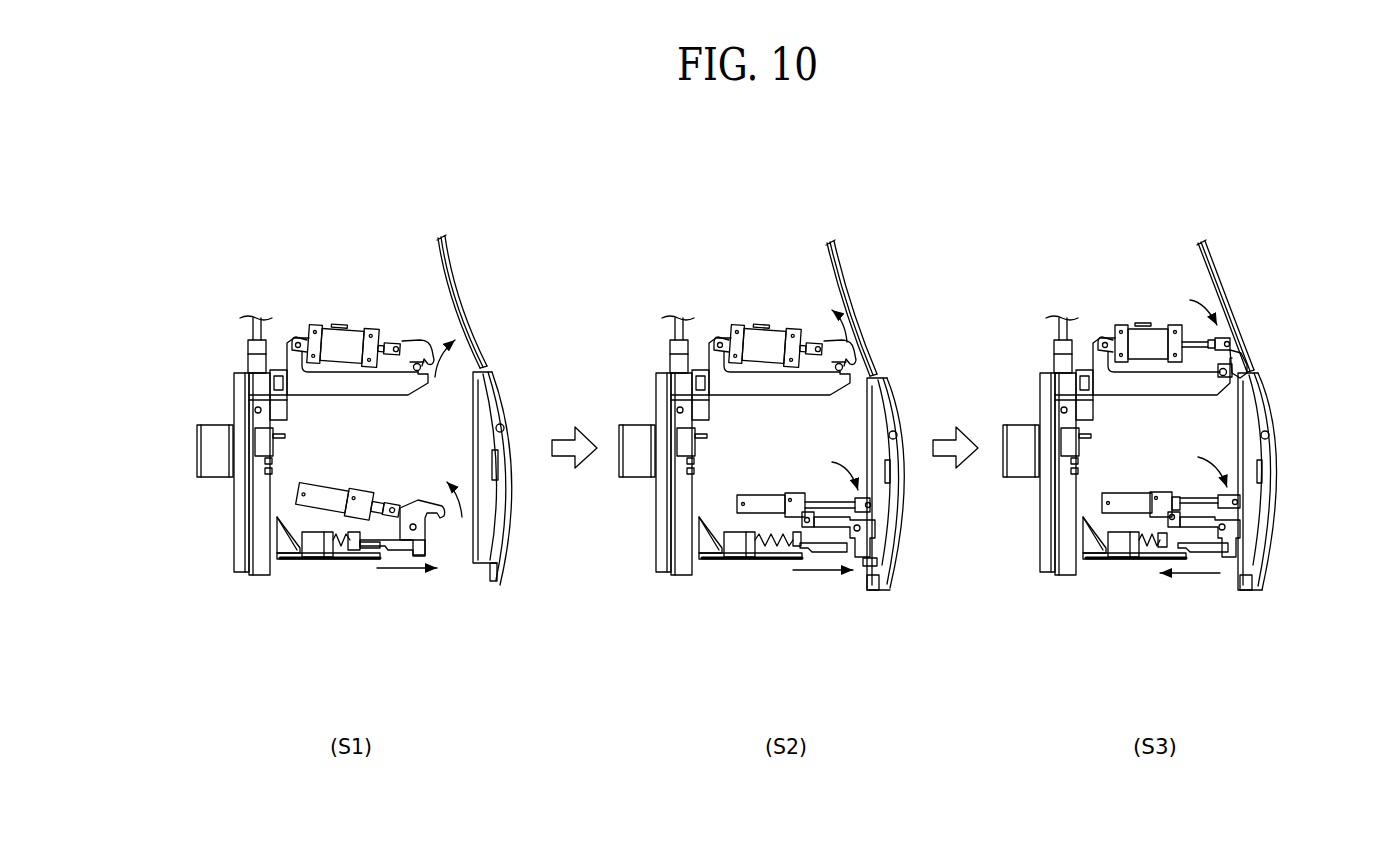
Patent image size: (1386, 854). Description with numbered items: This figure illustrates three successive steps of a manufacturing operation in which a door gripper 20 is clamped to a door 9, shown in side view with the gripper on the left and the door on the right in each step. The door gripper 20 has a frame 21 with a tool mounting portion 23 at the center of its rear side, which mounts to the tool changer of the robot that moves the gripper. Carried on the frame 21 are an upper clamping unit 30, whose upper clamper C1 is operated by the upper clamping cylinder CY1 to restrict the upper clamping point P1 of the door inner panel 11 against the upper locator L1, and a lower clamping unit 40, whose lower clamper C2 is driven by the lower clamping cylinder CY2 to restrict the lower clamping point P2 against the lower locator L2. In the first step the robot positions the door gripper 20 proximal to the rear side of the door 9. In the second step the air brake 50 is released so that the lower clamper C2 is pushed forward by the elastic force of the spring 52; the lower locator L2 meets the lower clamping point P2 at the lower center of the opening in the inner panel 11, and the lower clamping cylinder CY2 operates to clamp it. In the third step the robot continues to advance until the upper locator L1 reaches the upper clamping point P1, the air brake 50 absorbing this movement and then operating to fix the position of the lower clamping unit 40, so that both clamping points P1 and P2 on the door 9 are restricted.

The door 9 is at (517, 393).
The inner panel 11 is at (495, 488).
The door gripper 20 is at (215, 373).
The frame 21 is at (235, 522).
The tool mounting portion 23 is at (207, 428).
The upper clamping unit 30 is at (353, 297).
The lower clamping unit 40 is at (367, 598).
The air brake 50 is at (312, 558).
The spring 52 is at (345, 558).
The upper clamping cylinder CY1 is at (327, 327).
The lower clamping cylinder CY2 is at (317, 495).
The upper clamper C1 is at (415, 348).
The lower clamper C2 is at (420, 500).
The upper locator L1 is at (353, 392).
The lower locator L2 is at (398, 548).
The upper clamping point P1 is at (489, 367).
The lower clamping point P2 is at (502, 545).